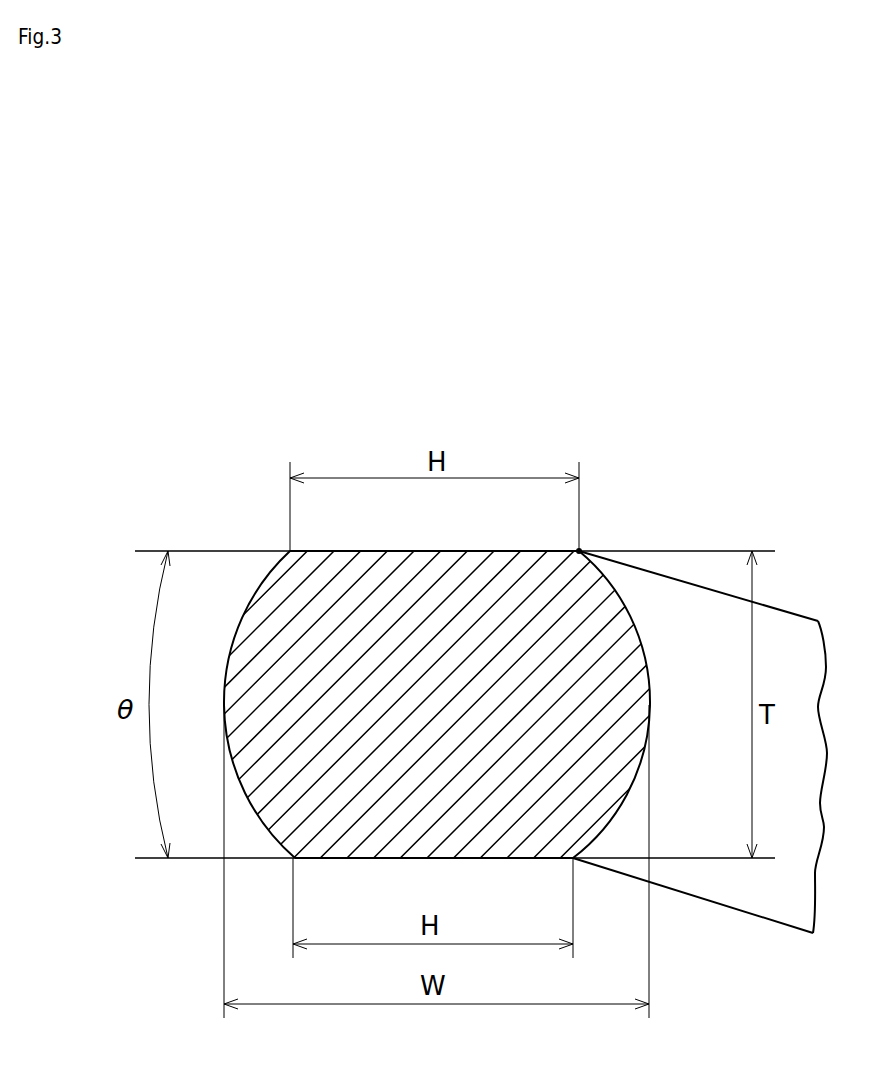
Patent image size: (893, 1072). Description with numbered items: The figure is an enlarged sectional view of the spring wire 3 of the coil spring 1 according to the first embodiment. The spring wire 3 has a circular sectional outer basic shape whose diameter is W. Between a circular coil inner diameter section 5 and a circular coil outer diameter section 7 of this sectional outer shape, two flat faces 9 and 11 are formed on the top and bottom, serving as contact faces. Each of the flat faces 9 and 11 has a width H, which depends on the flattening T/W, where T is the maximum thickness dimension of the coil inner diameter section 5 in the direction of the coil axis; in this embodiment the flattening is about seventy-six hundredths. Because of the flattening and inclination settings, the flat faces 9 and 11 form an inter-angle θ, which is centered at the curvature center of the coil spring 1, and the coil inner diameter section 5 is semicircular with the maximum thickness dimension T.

The coil spring 1 is at (789, 609).
The spring wire 3 is at (582, 550).
The coil inner diameter section 5 is at (642, 637).
The coil outer diameter section 7 is at (252, 603).
The flat face 9 is at (482, 550).
The flat face 11 is at (500, 860).